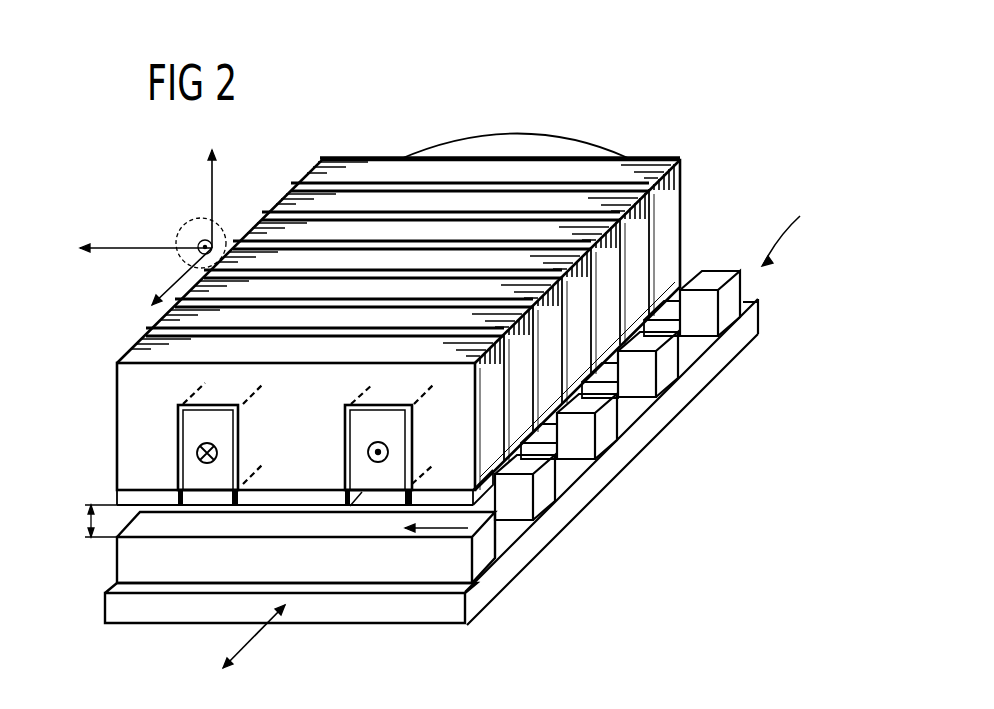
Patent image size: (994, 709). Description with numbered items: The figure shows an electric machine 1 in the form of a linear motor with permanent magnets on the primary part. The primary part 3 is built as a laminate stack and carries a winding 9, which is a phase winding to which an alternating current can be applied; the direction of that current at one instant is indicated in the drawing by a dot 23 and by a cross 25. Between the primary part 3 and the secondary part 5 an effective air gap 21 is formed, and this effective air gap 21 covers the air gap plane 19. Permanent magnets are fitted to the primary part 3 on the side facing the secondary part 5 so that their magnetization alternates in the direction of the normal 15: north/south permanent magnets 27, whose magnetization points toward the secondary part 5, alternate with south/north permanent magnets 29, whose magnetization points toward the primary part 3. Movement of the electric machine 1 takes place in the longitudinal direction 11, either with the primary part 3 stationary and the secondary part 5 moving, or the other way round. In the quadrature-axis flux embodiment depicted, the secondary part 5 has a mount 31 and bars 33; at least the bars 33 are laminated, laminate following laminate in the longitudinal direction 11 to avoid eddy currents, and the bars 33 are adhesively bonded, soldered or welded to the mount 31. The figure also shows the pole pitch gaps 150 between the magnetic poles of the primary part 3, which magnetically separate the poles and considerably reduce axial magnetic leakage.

The electric machine 1 is at (786, 168).
The primary part 3 is at (677, 225).
The secondary part 5 is at (829, 235).
The winding 9 is at (518, 146).
The longitudinal direction 11 is at (176, 284).
The normal 15 is at (211, 188).
The air gap plane 19 is at (521, 563).
The effective air gap 21 is at (85, 522).
The dot 23 is at (368, 450).
The cross 25 is at (197, 450).
The north/south permanent magnets 27 is at (117, 496).
The south/north permanent magnets 29 is at (293, 498).
The mount 31 is at (418, 608).
The bars 33 is at (487, 567).
The pole pitch gaps 150 is at (400, 183).